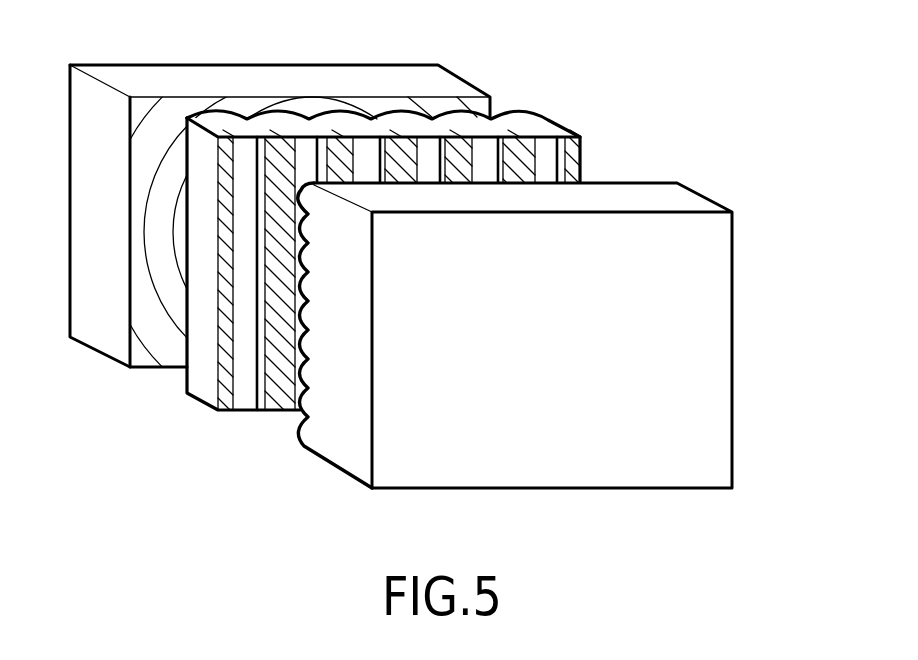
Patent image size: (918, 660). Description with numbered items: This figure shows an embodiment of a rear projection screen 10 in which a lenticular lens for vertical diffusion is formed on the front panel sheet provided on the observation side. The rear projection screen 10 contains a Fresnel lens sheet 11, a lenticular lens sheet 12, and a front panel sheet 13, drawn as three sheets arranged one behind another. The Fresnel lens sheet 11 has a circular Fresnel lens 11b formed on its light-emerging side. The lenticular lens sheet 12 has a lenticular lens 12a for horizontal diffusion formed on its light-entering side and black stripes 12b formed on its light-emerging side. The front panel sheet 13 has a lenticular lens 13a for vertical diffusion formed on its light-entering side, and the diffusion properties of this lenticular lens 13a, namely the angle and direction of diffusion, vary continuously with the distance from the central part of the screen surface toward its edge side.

The rear projection screen 10 is at (540, 19).
The Fresnel lens sheet 11 is at (445, 78).
The circular Fresnel lens 11b is at (178, 112).
The lenticular lens sheet 12 is at (426, 230).
The lenticular lens for horizontal diffusion 12a is at (508, 113).
The black stripes 12b is at (577, 146).
The front panel sheet 13 is at (471, 317).
The lenticular lens for vertical diffusion 13a is at (300, 436).